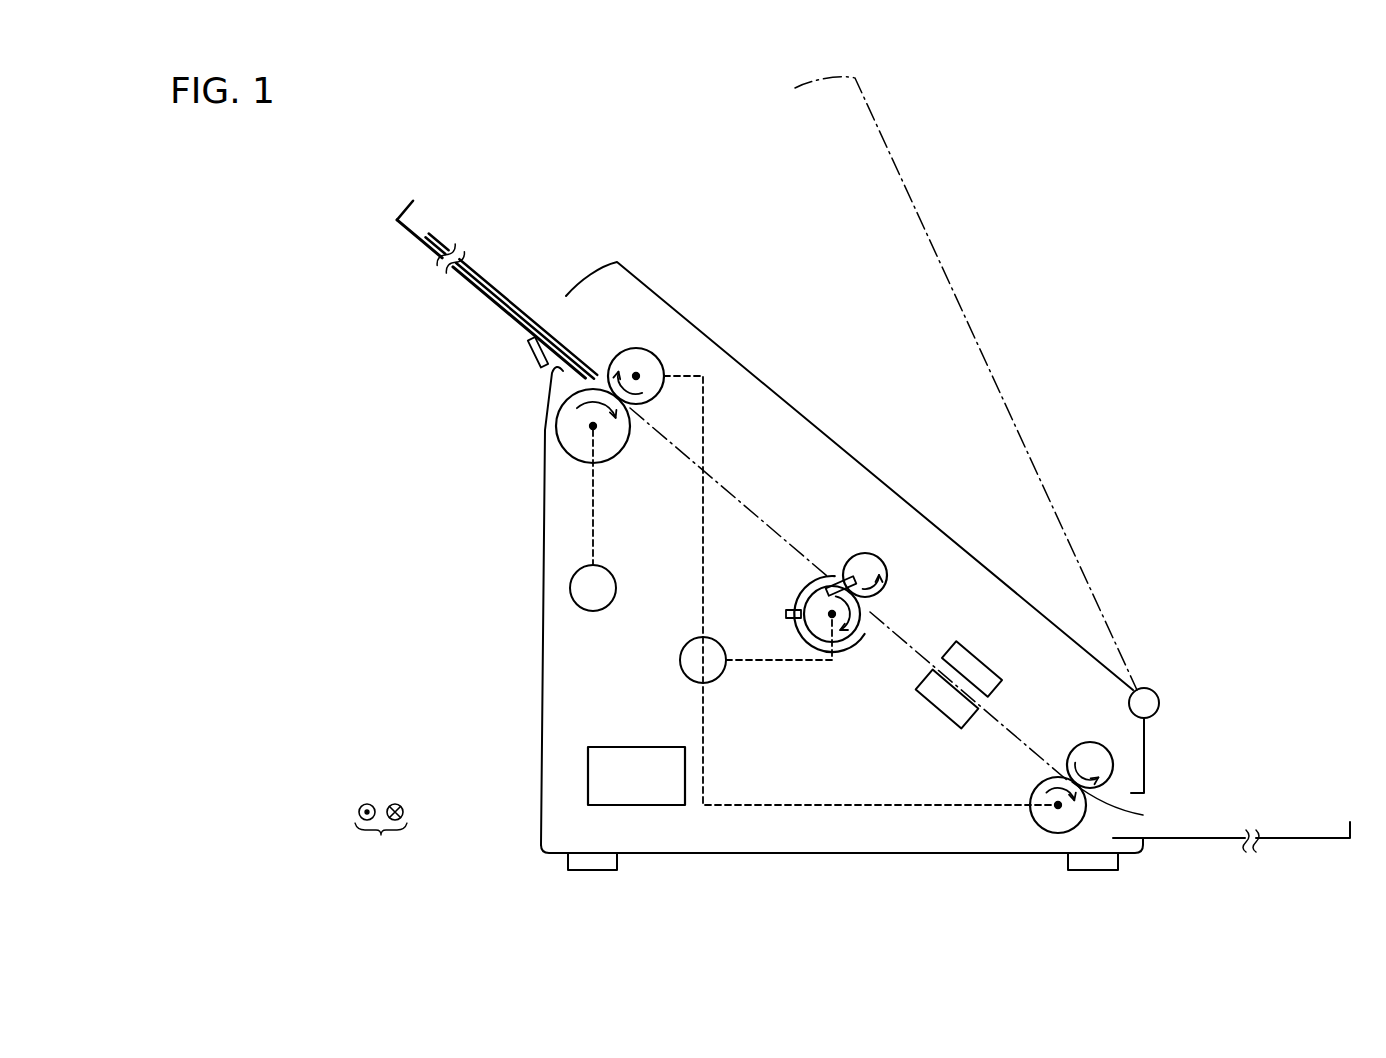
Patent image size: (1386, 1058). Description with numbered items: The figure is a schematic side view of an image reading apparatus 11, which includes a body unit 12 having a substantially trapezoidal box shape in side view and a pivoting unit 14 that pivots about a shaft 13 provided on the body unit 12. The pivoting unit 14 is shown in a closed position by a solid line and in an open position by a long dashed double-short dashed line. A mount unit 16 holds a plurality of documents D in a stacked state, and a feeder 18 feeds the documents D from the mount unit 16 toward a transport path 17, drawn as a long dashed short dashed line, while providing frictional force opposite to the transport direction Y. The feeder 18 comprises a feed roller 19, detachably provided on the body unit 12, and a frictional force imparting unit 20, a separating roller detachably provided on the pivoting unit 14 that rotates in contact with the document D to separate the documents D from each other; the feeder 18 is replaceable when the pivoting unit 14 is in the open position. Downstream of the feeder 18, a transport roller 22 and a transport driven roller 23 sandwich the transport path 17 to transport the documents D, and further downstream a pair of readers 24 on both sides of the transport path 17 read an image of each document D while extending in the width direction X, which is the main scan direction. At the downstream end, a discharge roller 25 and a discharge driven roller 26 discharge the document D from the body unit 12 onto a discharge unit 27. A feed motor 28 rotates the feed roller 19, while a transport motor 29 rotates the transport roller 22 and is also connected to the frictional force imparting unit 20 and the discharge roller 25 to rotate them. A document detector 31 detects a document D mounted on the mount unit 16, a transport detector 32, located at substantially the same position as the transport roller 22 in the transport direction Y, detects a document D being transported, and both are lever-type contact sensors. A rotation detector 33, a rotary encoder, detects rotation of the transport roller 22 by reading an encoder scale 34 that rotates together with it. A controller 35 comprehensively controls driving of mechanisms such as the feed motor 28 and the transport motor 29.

The image reading apparatus 11 is at (367, 167).
The body unit 12 is at (542, 540).
The shaft 13 is at (1159, 700).
The pivoting unit 14 is at (790, 400).
The mount unit 16 is at (408, 230).
The transport path 17 is at (722, 474).
The feeder 18 is at (560, 454).
The feed roller 19 is at (620, 451).
The frictional force imparting unit 20 is at (637, 350).
The transport roller 22 is at (812, 621).
The transport driven roller 23 is at (888, 577).
The reader 24 is at (977, 652).
The discharge roller 25 is at (1041, 782).
The discharge driven roller 26 is at (1093, 742).
The discharge unit 27 is at (1306, 838).
The feed motor 28 is at (617, 584).
The transport motor 29 is at (680, 656).
The document detector 31 is at (536, 345).
The transport detector 32 is at (853, 566).
The rotation detector 33 is at (786, 613).
The encoder scale 34 is at (801, 583).
The controller 35 is at (632, 747).
The document D is at (492, 277).
The width direction X is at (381, 832).
The transport direction Y is at (793, 527).